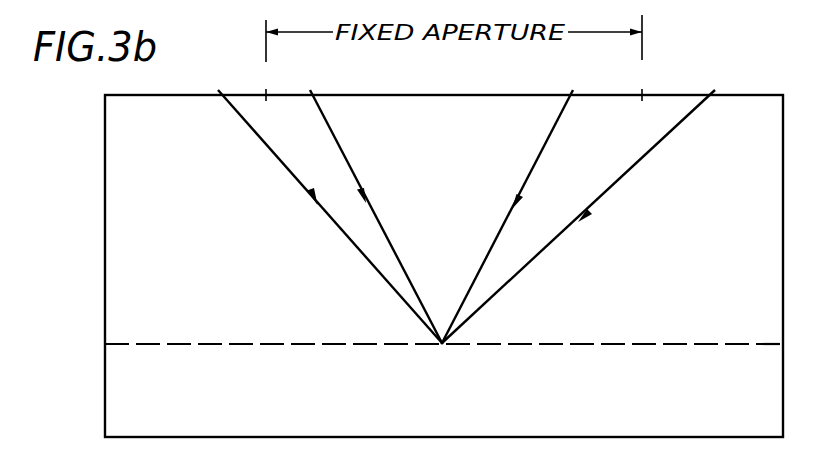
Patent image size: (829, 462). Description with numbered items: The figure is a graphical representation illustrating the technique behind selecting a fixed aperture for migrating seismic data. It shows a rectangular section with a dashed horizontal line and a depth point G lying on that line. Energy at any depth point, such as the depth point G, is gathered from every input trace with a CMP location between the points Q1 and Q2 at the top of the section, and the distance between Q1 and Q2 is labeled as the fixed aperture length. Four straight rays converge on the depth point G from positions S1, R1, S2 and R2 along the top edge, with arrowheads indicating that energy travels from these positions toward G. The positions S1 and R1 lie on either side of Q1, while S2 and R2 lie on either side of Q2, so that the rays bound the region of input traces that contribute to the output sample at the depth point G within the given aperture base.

The first source ray edge S1 is at (318, 204).
The first fixed aperture edge Q1 is at (292, 60).
The first reference ray edge R1 is at (370, 204).
The second source ray edge S2 is at (513, 204).
The second fixed aperture edge Q2 is at (610, 58).
The second reference ray edge R2 is at (590, 204).
The depth point G is at (444, 360).